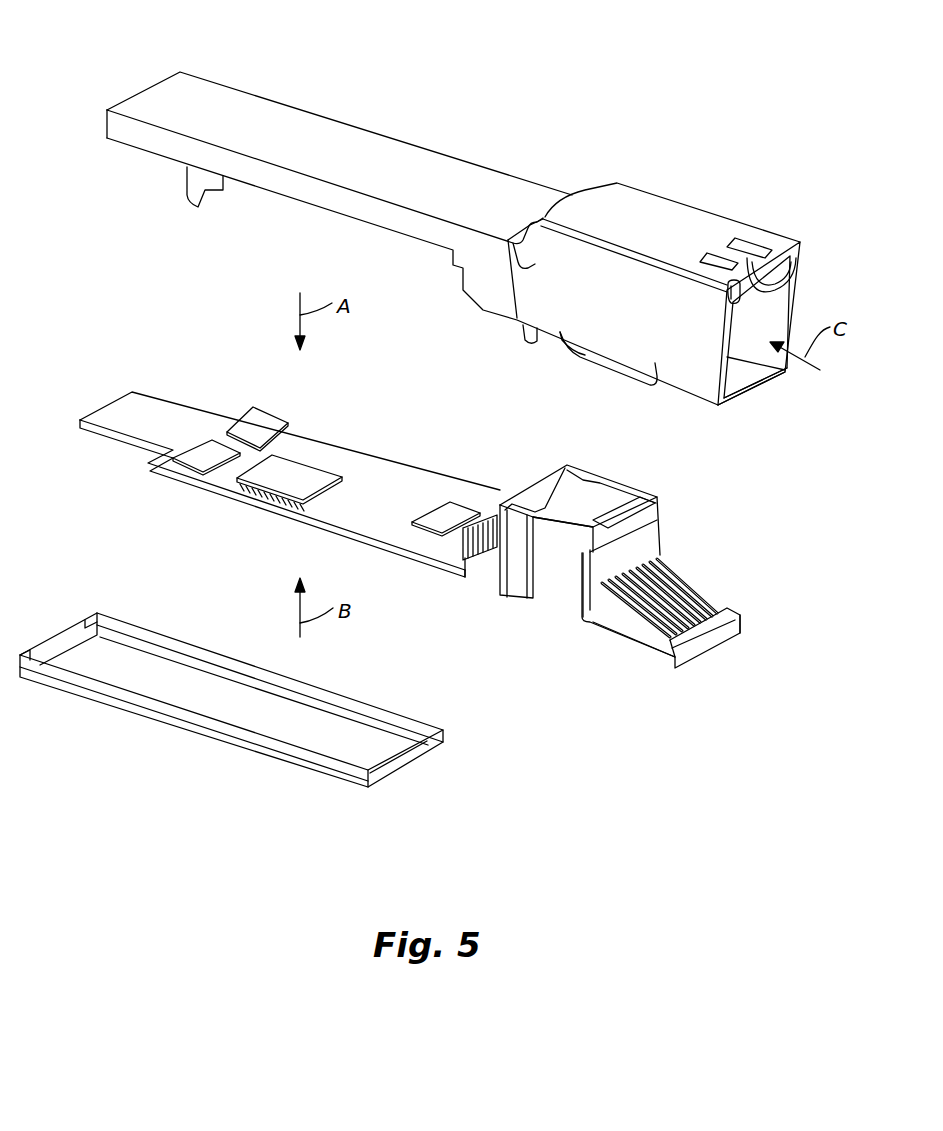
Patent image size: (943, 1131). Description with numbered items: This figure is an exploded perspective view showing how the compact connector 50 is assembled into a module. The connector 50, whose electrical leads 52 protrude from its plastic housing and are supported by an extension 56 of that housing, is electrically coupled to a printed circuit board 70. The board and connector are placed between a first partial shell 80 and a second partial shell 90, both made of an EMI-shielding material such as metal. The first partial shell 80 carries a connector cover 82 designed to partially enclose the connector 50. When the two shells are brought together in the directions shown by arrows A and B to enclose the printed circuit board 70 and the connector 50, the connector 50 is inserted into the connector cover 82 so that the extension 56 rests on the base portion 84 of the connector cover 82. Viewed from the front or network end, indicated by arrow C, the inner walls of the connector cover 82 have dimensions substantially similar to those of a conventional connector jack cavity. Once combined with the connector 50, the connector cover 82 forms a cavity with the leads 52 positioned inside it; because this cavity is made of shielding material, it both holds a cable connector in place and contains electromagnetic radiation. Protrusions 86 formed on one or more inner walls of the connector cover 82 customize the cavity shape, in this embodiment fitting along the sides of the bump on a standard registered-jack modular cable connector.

The connector 50 is at (618, 594).
The electrical leads 52 is at (680, 590).
The extension 56 is at (673, 677).
The printed circuit board 70 is at (390, 508).
The first partial shell 80 is at (203, 52).
The connector cover 82 is at (620, 184).
The base portion 84 is at (733, 383).
The protrusions 86 is at (775, 283).
The second partial shell 90 is at (412, 769).